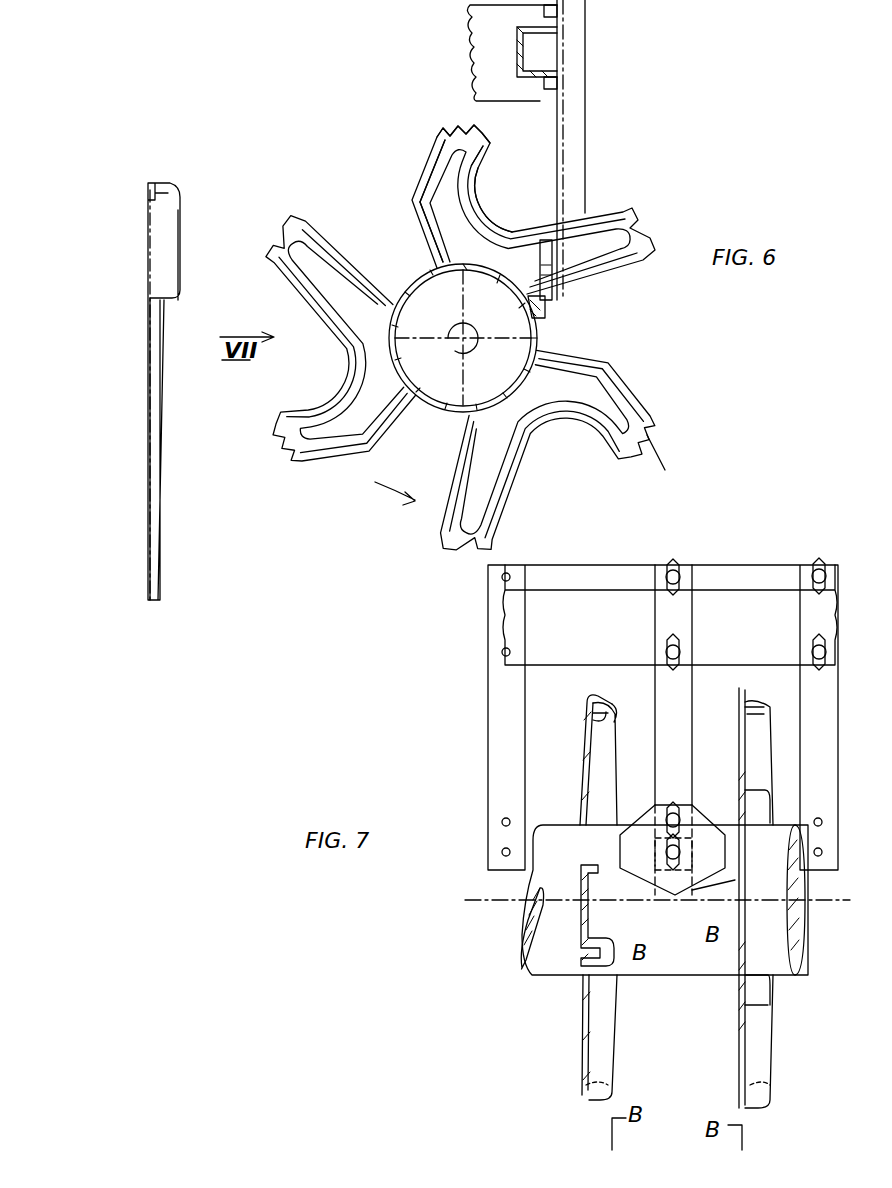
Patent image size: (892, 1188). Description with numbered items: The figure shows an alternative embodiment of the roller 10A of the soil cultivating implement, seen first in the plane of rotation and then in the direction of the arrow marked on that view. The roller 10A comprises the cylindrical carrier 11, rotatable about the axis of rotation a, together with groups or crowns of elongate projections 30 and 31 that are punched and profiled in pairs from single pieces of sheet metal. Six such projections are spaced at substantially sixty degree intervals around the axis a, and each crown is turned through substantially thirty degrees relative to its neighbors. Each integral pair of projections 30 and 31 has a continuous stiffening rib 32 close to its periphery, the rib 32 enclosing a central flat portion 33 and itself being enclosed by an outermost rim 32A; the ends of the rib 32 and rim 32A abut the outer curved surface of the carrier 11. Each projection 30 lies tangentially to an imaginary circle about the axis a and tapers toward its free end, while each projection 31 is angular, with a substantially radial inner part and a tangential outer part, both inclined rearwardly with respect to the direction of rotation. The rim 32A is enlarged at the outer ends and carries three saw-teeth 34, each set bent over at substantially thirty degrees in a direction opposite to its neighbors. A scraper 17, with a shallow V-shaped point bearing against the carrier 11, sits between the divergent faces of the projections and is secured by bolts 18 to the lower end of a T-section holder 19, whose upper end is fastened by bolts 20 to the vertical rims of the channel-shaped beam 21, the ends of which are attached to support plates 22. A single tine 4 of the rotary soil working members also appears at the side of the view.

In FIG. 6, the tine 4 is at (158, 427).
In FIG. 7, the roller 10A is at (682, 1039).
In FIG. 6, the carrier 11 is at (425, 290).
In FIG. 7, the carrier 11 is at (664, 976).
In FIG. 6, the scraper 17 is at (548, 312).
In FIG. 7, the scraper 17 is at (738, 905).
In FIG. 6, the bolts 18 is at (540, 260).
In FIG. 7, the bolts 18 is at (650, 835).
In FIG. 6, the holder 19 is at (580, 118).
In FIG. 7, the holder 19 is at (492, 686).
In FIG. 6, the bolts 20 is at (558, 80).
In FIG. 7, the bolts 20 is at (670, 640).
In FIG. 6, the beam 21 is at (517, 33).
In FIG. 7, the beam 21 is at (750, 566).
In FIG. 6, the support plate 22 is at (470, 45).
In FIG. 6, the projection 30 is at (336, 222).
In FIG. 6, the projection 31 is at (423, 160).
In FIG. 6, the stiffening rib 32 is at (468, 150).
In FIG. 7, the stiffening rib 32 is at (610, 710).
In FIG. 6, the outermost rim 32A is at (422, 180).
In FIG. 6, the central flat portion 33 is at (488, 246).
In FIG. 7, the central flat portion 33 is at (582, 918).
In FIG. 6, the saw-teeth 34 is at (459, 122).
In FIG. 7, the saw-teeth 34 is at (584, 694).
In FIG. 6, the axis of rotation a is at (466, 352).
In FIG. 7, the axis of rotation a is at (475, 905).